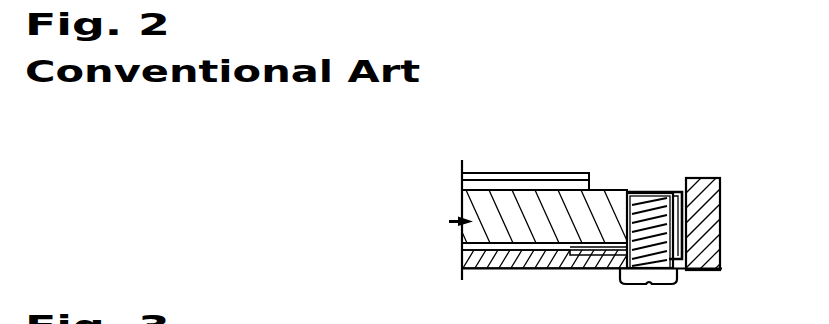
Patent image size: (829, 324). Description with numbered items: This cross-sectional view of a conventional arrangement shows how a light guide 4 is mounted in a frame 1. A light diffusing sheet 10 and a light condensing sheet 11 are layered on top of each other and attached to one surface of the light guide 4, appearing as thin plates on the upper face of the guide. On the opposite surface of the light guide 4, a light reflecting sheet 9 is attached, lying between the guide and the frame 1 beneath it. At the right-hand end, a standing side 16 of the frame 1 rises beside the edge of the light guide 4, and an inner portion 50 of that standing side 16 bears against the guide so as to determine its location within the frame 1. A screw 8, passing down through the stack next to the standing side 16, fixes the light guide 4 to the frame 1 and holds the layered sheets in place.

The frame 1 is at (559, 270).
The light guide 4 is at (559, 203).
The screw 8 is at (676, 290).
The light reflecting sheet 9 is at (503, 247).
The light diffusing sheet 10 is at (527, 186).
The light condensing sheet 11 is at (488, 176).
The standing side 16 is at (715, 182).
The inner portion 50 is at (683, 192).